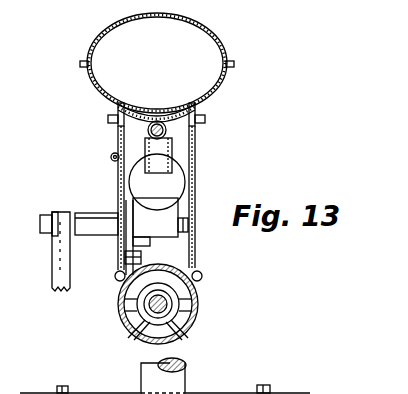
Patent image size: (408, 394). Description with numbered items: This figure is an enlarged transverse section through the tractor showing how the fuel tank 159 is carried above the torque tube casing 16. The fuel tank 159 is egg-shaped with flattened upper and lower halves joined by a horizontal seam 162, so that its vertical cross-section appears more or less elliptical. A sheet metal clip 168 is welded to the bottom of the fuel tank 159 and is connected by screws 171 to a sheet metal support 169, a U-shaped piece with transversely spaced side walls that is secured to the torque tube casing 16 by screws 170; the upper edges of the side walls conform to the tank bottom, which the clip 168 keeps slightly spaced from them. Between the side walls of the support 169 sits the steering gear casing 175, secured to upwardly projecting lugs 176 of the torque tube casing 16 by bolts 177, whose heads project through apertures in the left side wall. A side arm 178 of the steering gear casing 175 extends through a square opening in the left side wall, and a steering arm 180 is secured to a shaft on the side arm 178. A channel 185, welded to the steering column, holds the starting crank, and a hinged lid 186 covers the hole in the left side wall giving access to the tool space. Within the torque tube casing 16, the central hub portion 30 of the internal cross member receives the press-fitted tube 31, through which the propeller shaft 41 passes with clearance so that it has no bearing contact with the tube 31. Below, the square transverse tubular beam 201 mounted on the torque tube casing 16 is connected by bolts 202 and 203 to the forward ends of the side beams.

The fuel tank 159 is at (197, 34).
The horizontal seam 162 is at (233, 65).
The sheet metal clip 168 is at (147, 112).
The screws 171 is at (112, 119).
The sheet metal support 169 is at (196, 162).
The channel 185 is at (172, 148).
The hinged lid 186 is at (117, 172).
The steering gear casing 175 is at (158, 237).
The side arm 178 is at (100, 213).
The steering arm 180 is at (53, 273).
The lugs 176 is at (118, 250).
The bolts 177 is at (121, 263).
The torque tube casing 16 is at (199, 312).
The screws 170 is at (117, 279).
The hub portion 30 is at (122, 313).
The tube 31 is at (130, 333).
The propeller shaft 41 is at (188, 334).
The transverse tubular beam 201 is at (225, 392).
The bolts 202 is at (62, 385).
The bolts 203 is at (264, 385).